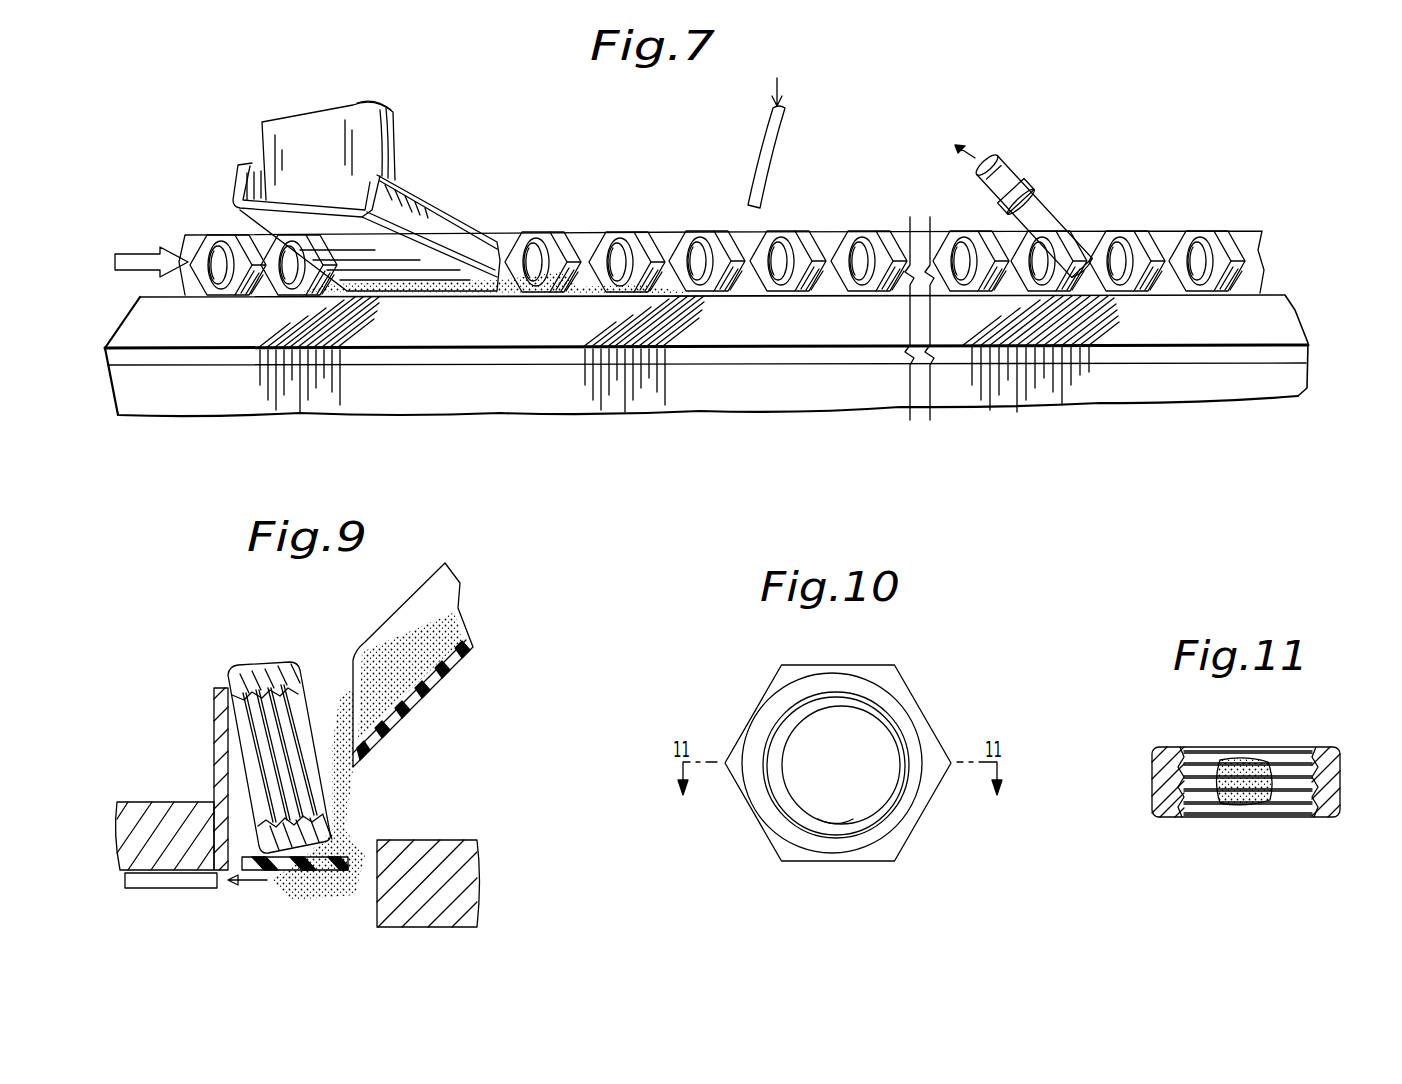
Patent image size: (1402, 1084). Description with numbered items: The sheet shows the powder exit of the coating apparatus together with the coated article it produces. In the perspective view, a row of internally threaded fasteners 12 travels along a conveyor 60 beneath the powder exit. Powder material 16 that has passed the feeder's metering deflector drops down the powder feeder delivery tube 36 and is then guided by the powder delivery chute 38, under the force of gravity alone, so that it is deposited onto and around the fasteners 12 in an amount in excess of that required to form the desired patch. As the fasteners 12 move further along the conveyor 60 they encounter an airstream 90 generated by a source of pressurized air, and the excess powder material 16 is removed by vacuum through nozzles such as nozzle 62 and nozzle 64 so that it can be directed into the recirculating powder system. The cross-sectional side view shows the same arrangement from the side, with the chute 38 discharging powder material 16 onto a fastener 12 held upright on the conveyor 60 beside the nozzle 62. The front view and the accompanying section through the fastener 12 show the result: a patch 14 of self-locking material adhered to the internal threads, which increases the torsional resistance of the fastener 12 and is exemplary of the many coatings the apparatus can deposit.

In FIG. 7, the fastener 12 is at (683, 232).
In FIG. 9, the fastener 12 is at (285, 662).
In FIG. 10, the fastener 12 is at (762, 703).
In FIG. 11, the fastener 12 is at (1341, 756).
In FIG. 10, the patch 14 is at (848, 817).
In FIG. 11, the patch 14 is at (1240, 765).
In FIG. 7, the powder material 16 is at (580, 288).
In FIG. 9, the powder material 16 is at (327, 790).
In FIG. 7, the powder feeder delivery tube 36 is at (383, 150).
In FIG. 7, the powder delivery chute 38 is at (440, 222).
In FIG. 9, the powder delivery chute 38 is at (412, 607).
In FIG. 9, the conveyor 60 is at (297, 871).
In FIG. 9, the nozzle 62 is at (127, 880).
In FIG. 7, the nozzle 64 is at (1052, 222).
In FIG. 7, the airstream 90 is at (762, 162).